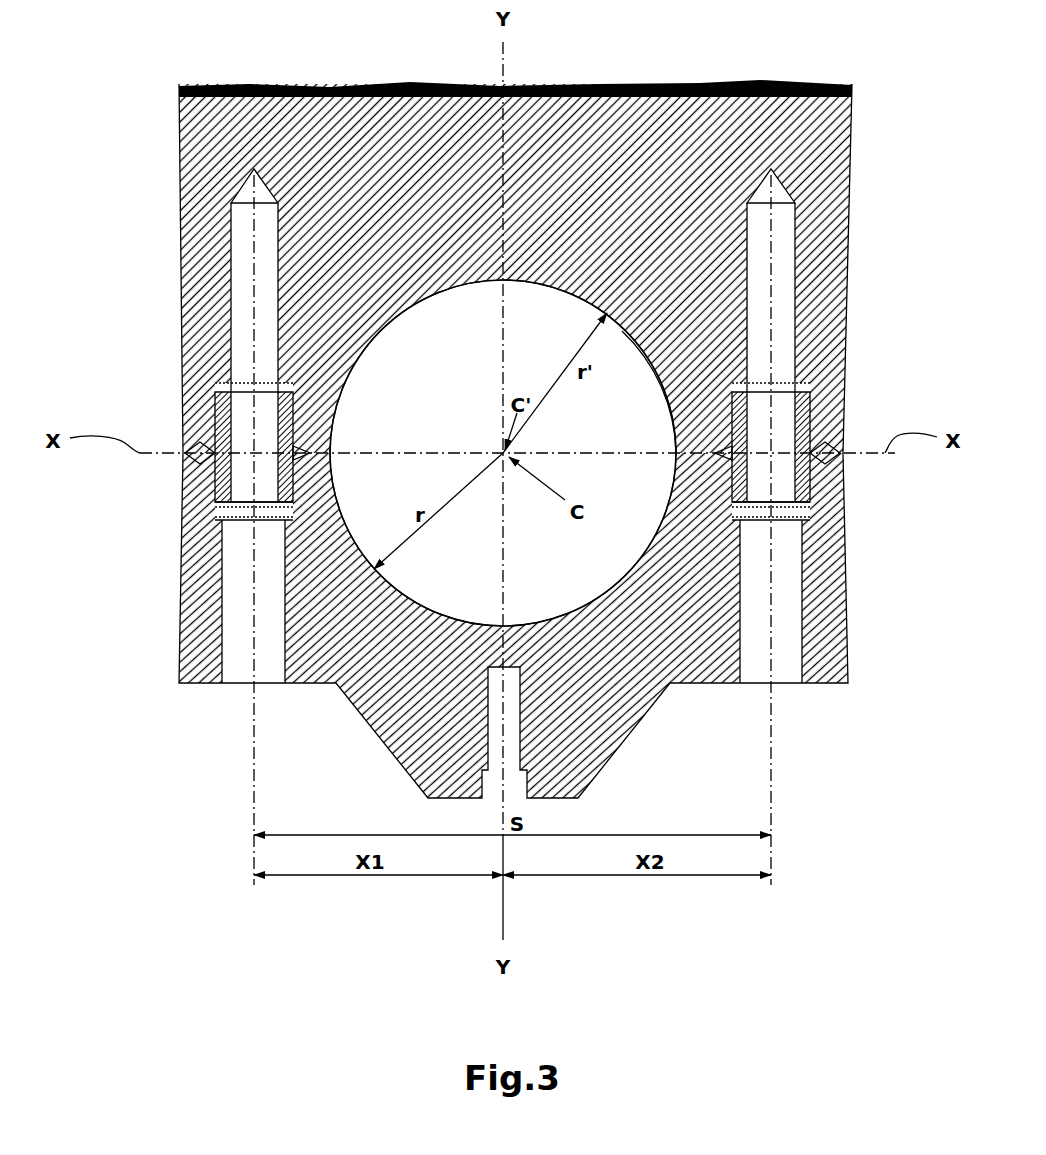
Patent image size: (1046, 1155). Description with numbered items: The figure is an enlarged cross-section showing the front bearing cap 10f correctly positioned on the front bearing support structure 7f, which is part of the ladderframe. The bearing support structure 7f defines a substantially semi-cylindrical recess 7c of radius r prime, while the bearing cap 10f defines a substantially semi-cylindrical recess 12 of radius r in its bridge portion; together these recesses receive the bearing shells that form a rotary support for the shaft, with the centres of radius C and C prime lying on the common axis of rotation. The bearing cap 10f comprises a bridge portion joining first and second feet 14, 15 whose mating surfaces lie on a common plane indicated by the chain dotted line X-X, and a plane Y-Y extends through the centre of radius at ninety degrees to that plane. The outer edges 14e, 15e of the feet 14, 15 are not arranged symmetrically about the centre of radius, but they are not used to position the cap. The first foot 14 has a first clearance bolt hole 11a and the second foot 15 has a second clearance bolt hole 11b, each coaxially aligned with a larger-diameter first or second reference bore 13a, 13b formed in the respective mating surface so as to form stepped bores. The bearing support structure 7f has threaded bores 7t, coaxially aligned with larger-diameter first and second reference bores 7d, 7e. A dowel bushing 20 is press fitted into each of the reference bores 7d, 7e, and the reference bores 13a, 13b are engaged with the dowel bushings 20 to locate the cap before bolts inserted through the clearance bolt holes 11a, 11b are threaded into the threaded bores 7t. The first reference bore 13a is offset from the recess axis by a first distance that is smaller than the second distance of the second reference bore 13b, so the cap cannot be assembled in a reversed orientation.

The front bearing support structure 7f is at (173, 128).
The threaded bore 7t is at (232, 223).
The first reference bore 7d is at (205, 422).
The semi-cylindrical recess 7c is at (383, 328).
The second reference bore 7e is at (728, 447).
The semi-cylindrical recess 12 is at (573, 610).
The first reference bore 13a is at (335, 452).
The second reference bore 13b is at (735, 465).
The first foot 14 is at (185, 481).
The outer edge of first foot 14e is at (187, 455).
The second foot 15 is at (840, 478).
The outer edge of second foot 15e is at (837, 460).
The dowel bushing 20 is at (200, 490).
The first clearance bolt hole 11a is at (217, 617).
The second clearance bolt hole 11b is at (800, 620).
The front bearing cap 10f is at (350, 702).